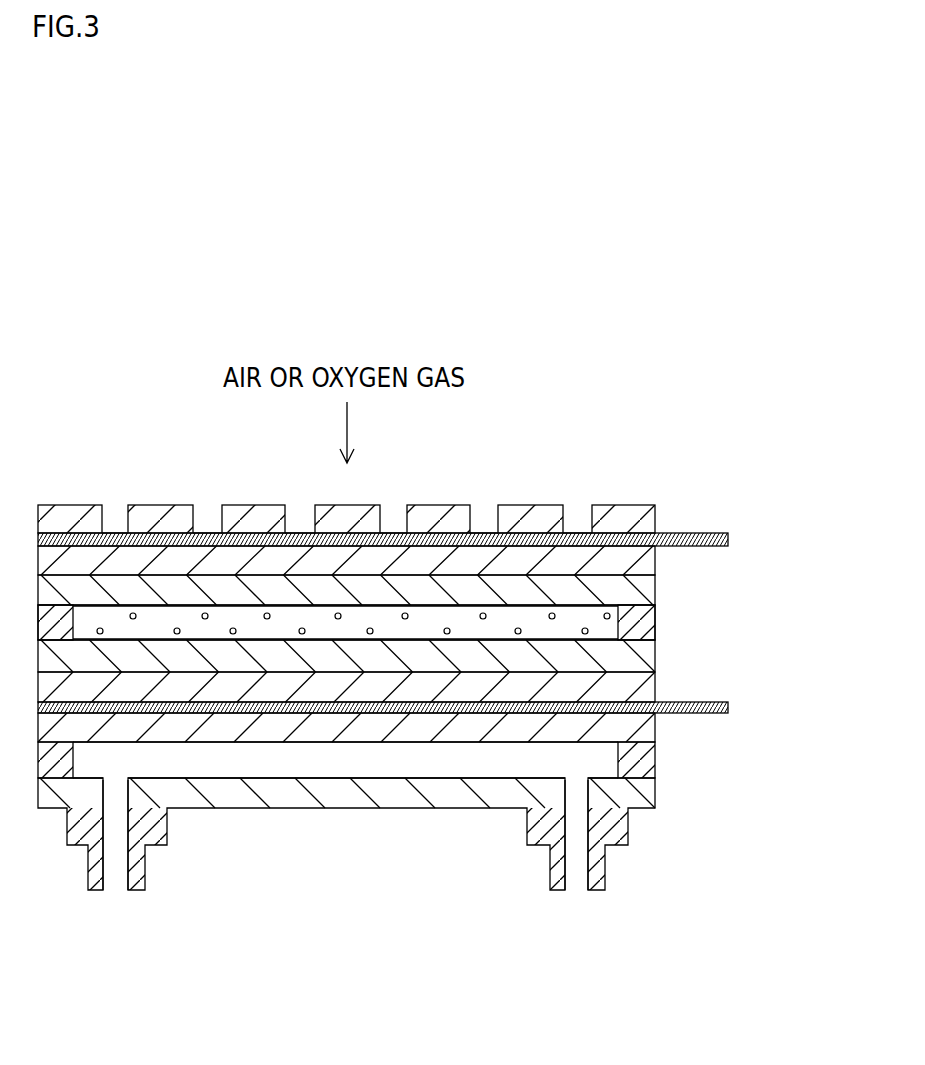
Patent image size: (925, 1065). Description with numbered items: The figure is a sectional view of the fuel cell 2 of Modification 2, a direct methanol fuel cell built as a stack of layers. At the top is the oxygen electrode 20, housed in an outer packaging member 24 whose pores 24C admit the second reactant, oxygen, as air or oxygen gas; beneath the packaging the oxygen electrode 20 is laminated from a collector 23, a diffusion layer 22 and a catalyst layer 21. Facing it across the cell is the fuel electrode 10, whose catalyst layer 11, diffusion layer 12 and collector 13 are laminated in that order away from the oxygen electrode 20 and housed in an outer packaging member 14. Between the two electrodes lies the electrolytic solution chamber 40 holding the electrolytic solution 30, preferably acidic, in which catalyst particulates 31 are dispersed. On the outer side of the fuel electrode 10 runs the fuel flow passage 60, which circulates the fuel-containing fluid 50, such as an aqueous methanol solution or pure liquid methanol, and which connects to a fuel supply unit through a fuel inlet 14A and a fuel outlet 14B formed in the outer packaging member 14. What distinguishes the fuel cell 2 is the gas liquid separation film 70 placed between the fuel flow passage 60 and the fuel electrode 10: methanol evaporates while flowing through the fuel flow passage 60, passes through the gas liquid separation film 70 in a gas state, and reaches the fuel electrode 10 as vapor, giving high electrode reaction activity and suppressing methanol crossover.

The fuel cell 2 is at (676, 432).
The fuel electrode 10 is at (829, 655).
The catalyst layer 11 is at (645, 655).
The diffusion layer 12 is at (645, 682).
The collector 13 is at (728, 707).
The outer packaging member 14 is at (650, 793).
The fuel inlet 14A is at (115, 883).
The fuel outlet 14B is at (577, 883).
The oxygen electrode 20 is at (829, 523).
The catalyst layer 21 is at (645, 590).
The diffusion layer 22 is at (645, 560).
The collector 23 is at (728, 540).
The outer packaging member 24 is at (658, 520).
The pores 24C is at (121, 502).
The electrolytic solution 30 is at (645, 625).
The catalyst particulates 31 is at (337, 619).
The electrolytic solution chamber 40 is at (278, 630).
The fuel-containing fluid 50 is at (650, 763).
The fuel flow passage 60 is at (232, 758).
The gas liquid separation film 70 is at (650, 728).